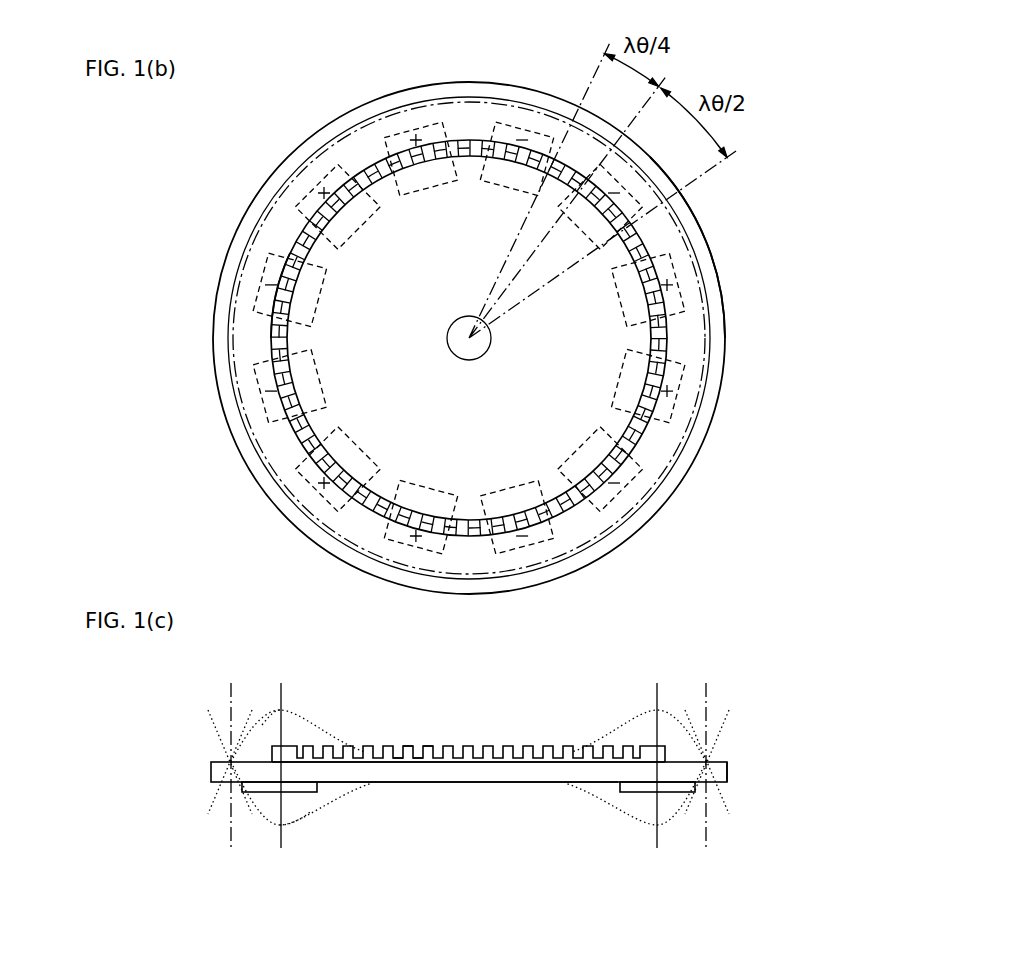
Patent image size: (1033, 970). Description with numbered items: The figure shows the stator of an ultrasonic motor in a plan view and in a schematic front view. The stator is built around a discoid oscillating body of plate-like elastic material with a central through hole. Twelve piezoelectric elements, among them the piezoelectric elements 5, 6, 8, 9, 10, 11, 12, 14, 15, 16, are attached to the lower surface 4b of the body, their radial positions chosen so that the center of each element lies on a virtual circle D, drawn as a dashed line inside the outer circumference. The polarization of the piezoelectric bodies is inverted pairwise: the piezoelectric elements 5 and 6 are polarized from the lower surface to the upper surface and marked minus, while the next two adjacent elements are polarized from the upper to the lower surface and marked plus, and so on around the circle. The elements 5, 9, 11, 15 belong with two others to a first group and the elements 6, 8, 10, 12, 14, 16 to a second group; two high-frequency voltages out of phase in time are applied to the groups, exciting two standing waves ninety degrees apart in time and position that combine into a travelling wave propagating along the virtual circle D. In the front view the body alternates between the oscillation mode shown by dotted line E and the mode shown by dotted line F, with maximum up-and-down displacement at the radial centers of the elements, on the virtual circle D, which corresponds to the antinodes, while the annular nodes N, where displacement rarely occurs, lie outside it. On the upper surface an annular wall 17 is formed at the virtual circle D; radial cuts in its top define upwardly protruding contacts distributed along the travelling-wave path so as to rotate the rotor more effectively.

The lower surface 4b is at (535, 783).
The piezoelectric element 5 is at (518, 128).
The piezoelectric element 6 is at (648, 168).
The piezoelectric element 8 is at (680, 387).
The piezoelectric element 9 is at (627, 490).
The piezoelectric element 10 is at (532, 548).
The piezoelectric element 11 is at (420, 553).
The piezoelectric element 12 is at (305, 488).
The piezoelectric element 14 is at (258, 272).
The piezoelectric element 15 is at (300, 188).
The piezoelectric element 16 is at (392, 128).
The annular wall 17 is at (667, 750).
The annular nodes N is at (250, 236).
The virtual circle D is at (272, 338).
The oscillation mode E is at (247, 728).
The oscillation mode F is at (297, 820).